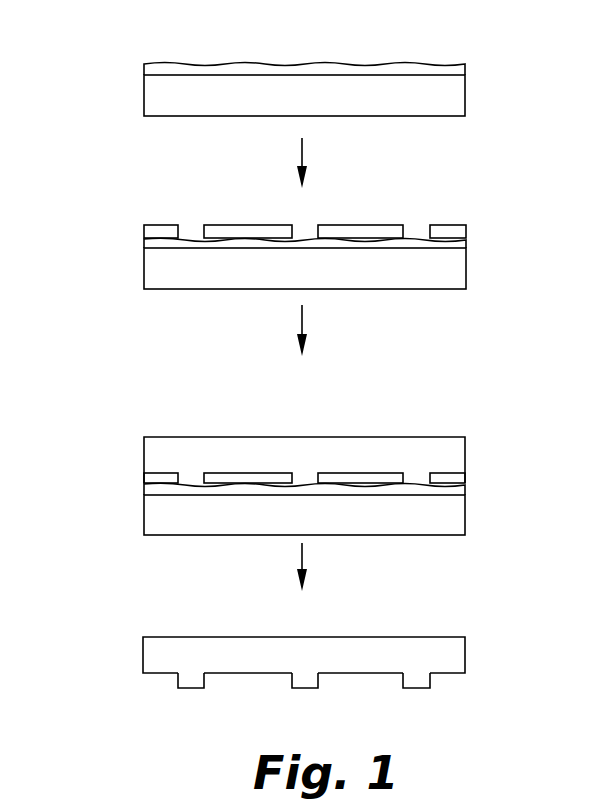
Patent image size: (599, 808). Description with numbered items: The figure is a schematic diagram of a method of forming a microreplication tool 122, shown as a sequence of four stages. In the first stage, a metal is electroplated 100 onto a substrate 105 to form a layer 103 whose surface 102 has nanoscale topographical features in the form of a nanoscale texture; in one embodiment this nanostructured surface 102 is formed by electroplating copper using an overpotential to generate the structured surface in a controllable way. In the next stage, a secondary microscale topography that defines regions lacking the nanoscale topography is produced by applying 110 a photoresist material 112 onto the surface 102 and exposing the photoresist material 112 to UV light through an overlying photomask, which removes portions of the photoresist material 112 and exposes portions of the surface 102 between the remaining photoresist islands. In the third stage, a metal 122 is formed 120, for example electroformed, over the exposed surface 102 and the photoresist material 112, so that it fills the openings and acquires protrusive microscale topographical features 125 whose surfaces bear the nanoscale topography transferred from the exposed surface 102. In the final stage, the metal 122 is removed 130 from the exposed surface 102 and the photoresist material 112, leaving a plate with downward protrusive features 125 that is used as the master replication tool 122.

The electroplating step 100 is at (84, 85).
The photoresist applying step 110 is at (84, 254).
The metal forming step 120 is at (84, 492).
The removal step 130 is at (84, 652).
The surface 102 is at (383, 63).
The layer 103 is at (463, 68).
The substrate 105 is at (463, 97).
The photoresist material 112 is at (268, 232).
The microreplication tool 122 is at (463, 450).
The protrusive microscale topographical features 125 is at (307, 475).